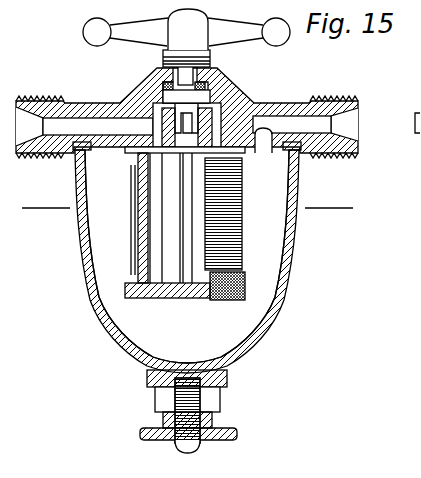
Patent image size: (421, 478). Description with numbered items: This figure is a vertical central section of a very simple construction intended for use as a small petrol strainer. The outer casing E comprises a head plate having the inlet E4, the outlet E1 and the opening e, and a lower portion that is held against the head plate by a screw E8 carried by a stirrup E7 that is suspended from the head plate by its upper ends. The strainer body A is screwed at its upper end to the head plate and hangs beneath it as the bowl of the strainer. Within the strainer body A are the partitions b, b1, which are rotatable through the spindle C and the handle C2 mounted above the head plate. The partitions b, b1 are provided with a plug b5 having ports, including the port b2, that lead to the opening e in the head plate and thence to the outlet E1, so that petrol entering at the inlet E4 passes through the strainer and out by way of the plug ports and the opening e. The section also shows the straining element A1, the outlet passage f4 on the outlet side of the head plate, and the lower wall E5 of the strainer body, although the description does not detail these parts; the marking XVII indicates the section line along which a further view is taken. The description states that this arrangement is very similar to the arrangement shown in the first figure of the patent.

The handle C2 is at (84, 32).
The spindle C is at (203, 96).
The outer casing E is at (76, 145).
The outlet E1 is at (24, 117).
The inlet E4 is at (348, 112).
The port b2 is at (152, 133).
The plug b5 is at (163, 99).
The opening e is at (217, 98).
The outlet passage f4 is at (259, 97).
The strainer body A is at (138, 226).
The filter cylinder A1 is at (228, 248).
The bowl wall E5 is at (95, 303).
The partition b1 is at (153, 273).
The partition b is at (170, 265).
The stirrup E7 is at (155, 398).
The screw E8 is at (220, 398).
The section line XVII is at (187, 199).